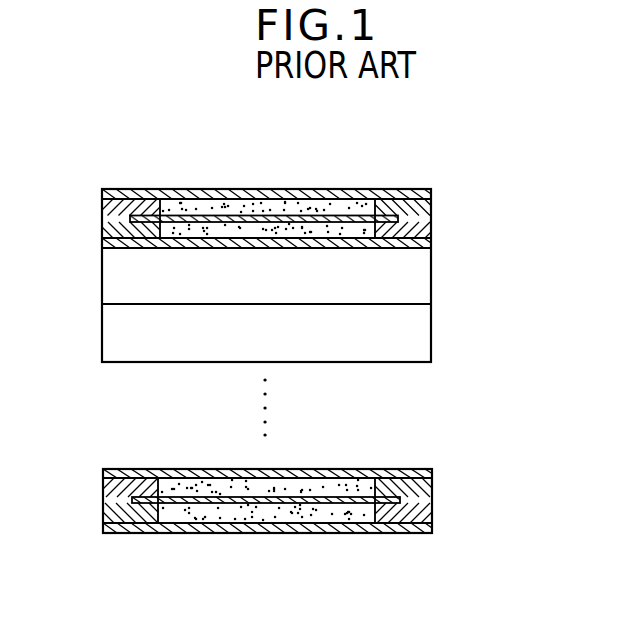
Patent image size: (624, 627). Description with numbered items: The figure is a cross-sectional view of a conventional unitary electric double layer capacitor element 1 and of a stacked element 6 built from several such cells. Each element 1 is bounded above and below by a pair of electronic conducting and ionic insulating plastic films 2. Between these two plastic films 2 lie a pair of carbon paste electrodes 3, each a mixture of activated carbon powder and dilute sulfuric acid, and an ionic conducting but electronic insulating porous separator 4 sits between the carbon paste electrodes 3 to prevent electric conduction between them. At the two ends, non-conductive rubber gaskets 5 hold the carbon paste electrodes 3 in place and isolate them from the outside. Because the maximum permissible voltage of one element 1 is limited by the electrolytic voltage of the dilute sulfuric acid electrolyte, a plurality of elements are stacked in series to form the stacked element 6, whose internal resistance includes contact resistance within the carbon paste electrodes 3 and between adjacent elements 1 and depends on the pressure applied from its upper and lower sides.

The unitary electric double layer capacitor element 1 is at (497, 172).
The electronic conducting and ionic insulating plastic film 2 is at (431, 193).
The carbon paste electrode 3 is at (174, 199).
The porous separator 4 is at (345, 198).
The non-conductive rubber gasket 5 is at (115, 204).
The stacked element 6 is at (528, 198).